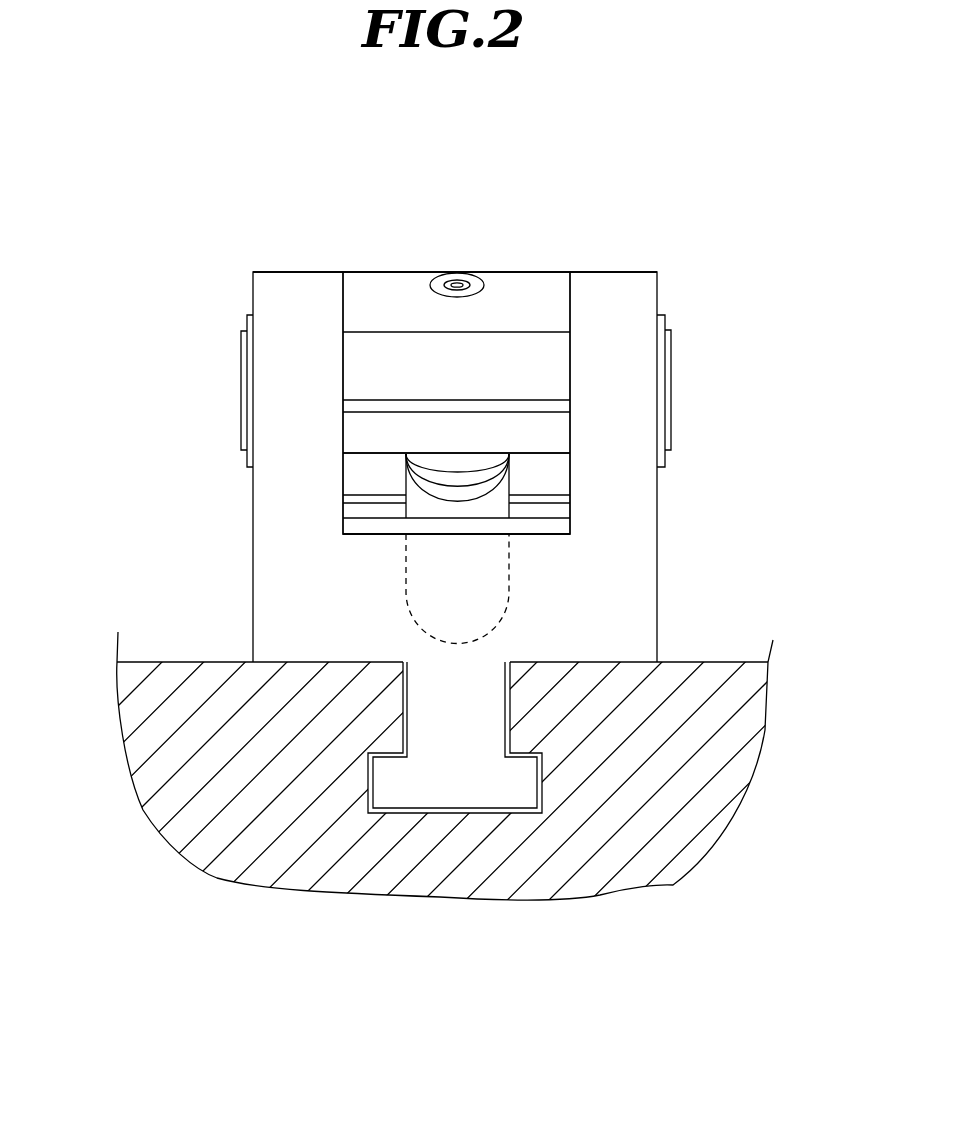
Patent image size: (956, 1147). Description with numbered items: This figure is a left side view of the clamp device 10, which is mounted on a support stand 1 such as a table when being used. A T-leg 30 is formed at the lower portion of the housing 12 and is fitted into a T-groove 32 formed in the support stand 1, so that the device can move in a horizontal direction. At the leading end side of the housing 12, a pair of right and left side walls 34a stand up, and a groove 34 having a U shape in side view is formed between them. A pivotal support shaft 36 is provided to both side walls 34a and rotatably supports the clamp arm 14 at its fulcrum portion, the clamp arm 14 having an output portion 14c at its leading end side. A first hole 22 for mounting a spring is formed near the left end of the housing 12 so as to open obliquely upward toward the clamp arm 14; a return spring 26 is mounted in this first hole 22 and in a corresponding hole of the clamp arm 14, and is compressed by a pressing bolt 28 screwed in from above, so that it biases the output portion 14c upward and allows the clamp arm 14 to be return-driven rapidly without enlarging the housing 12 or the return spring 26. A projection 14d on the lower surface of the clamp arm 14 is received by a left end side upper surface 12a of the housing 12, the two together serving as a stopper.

The support stand 1 is at (240, 853).
The clamp device 10 is at (204, 198).
The housing 12 is at (236, 579).
The left end side upper surface 12a is at (392, 523).
The clamp arm 14 is at (384, 256).
The output portion 14c is at (517, 363).
The projection 14d is at (343, 527).
The first hole 22 is at (482, 568).
The return spring 26 is at (509, 478).
The pressing bolt 28 is at (477, 273).
The T-leg 30 is at (442, 778).
The T-groove 32 is at (493, 807).
The groove 34 is at (345, 473).
The side walls 34a is at (303, 273).
The pivotal support shaft 36 is at (671, 383).